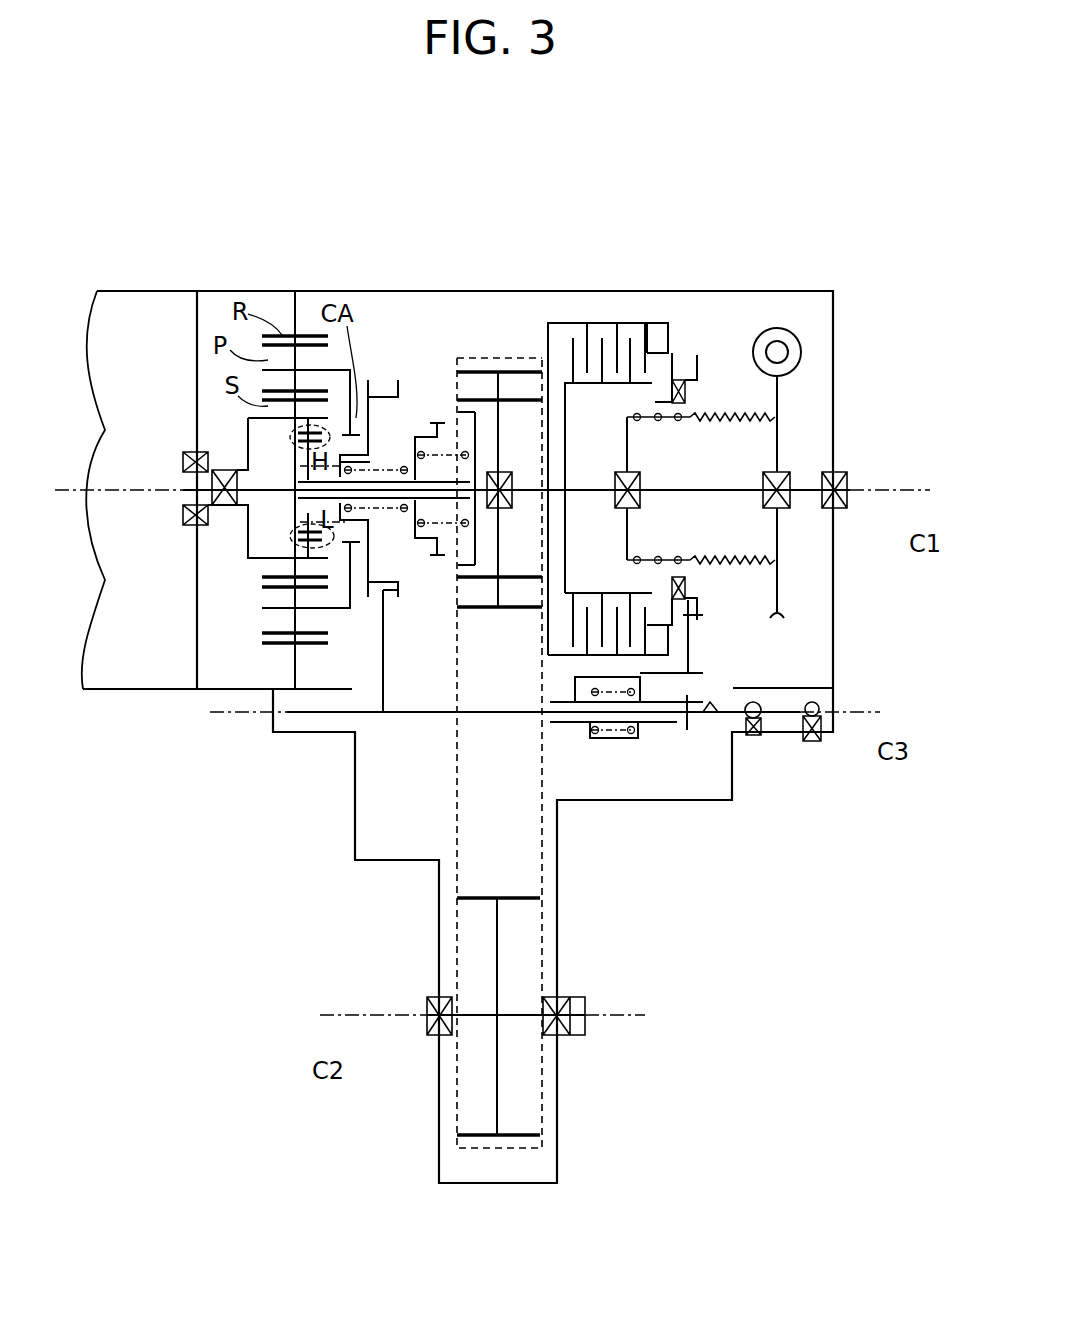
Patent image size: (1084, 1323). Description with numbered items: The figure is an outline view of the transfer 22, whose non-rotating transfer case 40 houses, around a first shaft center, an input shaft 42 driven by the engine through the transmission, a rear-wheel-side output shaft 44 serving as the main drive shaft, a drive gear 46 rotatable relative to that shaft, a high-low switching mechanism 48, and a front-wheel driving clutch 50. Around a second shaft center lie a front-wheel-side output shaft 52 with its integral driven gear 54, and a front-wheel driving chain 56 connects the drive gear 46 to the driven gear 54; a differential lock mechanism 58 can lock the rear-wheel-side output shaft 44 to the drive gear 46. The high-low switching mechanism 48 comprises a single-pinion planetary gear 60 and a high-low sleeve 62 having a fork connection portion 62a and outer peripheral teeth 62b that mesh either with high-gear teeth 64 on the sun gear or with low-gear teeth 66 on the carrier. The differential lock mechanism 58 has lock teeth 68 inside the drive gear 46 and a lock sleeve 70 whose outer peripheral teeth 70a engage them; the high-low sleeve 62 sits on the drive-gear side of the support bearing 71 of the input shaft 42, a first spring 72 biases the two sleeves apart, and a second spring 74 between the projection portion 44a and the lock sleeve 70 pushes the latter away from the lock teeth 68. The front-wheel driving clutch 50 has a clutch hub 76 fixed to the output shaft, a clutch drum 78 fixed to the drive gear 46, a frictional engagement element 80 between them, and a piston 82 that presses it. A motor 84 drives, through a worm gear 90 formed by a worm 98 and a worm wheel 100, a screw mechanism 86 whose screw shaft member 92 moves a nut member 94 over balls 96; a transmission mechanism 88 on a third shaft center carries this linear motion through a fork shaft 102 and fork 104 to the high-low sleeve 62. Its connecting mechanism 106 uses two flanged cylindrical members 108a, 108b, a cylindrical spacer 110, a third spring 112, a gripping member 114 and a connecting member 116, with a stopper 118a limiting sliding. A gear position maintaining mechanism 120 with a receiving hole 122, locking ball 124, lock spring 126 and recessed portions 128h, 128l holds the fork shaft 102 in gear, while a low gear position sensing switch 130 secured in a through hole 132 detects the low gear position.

The transfer 22 is at (762, 150).
The transfer case 40 is at (212, 290).
The input shaft 42 is at (145, 488).
The rear-wheel-side output shaft 44 is at (848, 480).
The projection portion 44a is at (488, 420).
The drive gear 46 is at (470, 370).
The high-low switching mechanism 48 is at (357, 215).
The front-wheel driving clutch 50 is at (602, 308).
The front-wheel-side output shaft 52 is at (422, 1012).
The driven gear 54 is at (485, 900).
The front-wheel driving chain 56 is at (456, 1103).
The differential lock mechanism 58 is at (438, 372).
The single-pinion planetary gear 60 is at (295, 290).
The high-low sleeve 62 is at (369, 400).
The fork connection portion 62a is at (388, 390).
The outer peripheral teeth 62b is at (305, 465).
The high-gear teeth 64 is at (306, 445).
The low-gear teeth 66 is at (356, 545).
The lock teeth 68 is at (460, 421).
The lock sleeve 70 is at (430, 434).
The outer peripheral teeth 70a is at (440, 424).
The support bearing 71 is at (182, 462).
The first spring 72 is at (400, 510).
The second spring 74 is at (467, 525).
The clutch hub 76 is at (610, 387).
The clutch drum 78 is at (610, 323).
The frictional engagement element 80 is at (655, 342).
The piston 82 is at (673, 360).
The motor 84 is at (780, 345).
The screw mechanism 86 is at (733, 348).
The transmission mechanism 88 is at (712, 778).
The worm gear 90 is at (813, 313).
The screw shaft member 92 is at (710, 417).
The nut member 94 is at (690, 405).
The balls 96 is at (657, 421).
The worm 98 is at (790, 354).
The worm wheel 100 is at (780, 392).
The fork shaft 102 is at (414, 715).
The fork 104 is at (385, 632).
The connecting mechanism 106 is at (712, 632).
The flanged cylindrical member 108a is at (572, 735).
The flanged cylindrical member 108b is at (657, 732).
The cylindrical spacer 110 is at (560, 692).
The third spring 112 is at (626, 735).
The gripping member 114 is at (604, 668).
The connecting member 116 is at (692, 646).
The stopper 118a is at (553, 720).
The gear position maintaining mechanism 120 is at (773, 793).
The receiving hole 122 is at (762, 722).
The locking ball 124 is at (712, 711).
The lock spring 126 is at (757, 735).
The recessed portion 128h is at (775, 713).
The recessed portion 128l is at (700, 724).
The low gear position sensing switch 130 is at (813, 757).
The through hole 132 is at (813, 738).